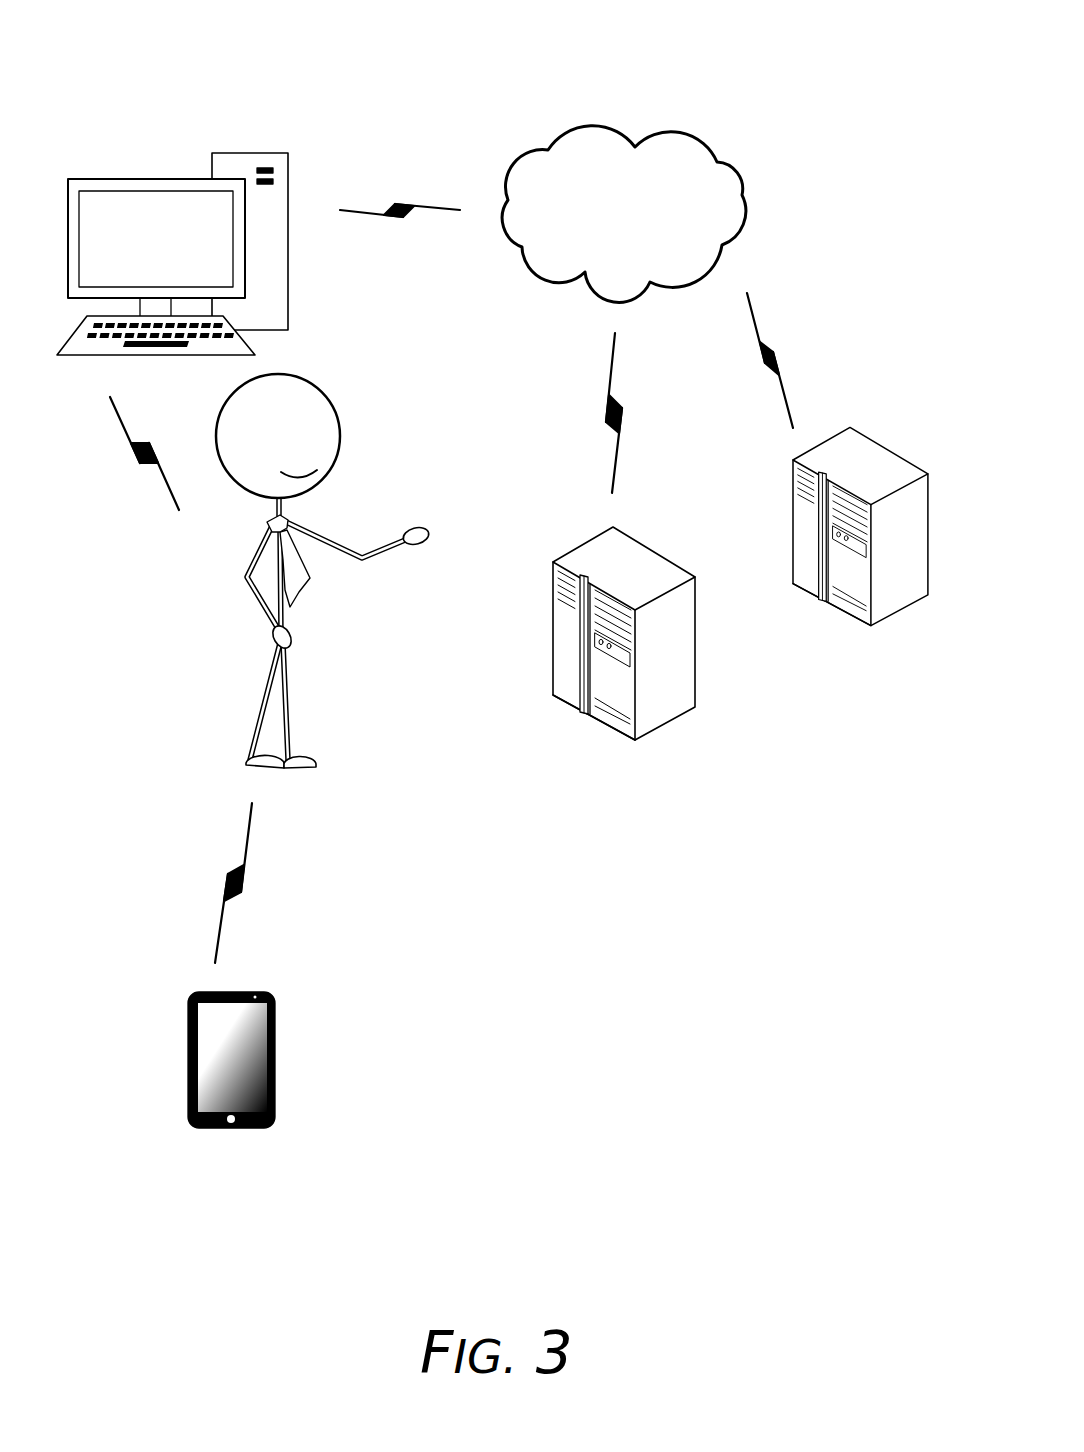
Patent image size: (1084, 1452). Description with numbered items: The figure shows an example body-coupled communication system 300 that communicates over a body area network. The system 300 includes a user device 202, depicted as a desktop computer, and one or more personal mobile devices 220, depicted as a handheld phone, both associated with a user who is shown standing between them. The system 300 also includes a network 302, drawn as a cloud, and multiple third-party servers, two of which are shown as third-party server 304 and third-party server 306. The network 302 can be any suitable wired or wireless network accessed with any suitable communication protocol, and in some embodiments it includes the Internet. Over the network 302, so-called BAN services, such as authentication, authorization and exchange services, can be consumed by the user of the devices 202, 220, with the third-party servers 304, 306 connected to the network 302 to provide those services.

The body-coupled communication system 300 is at (683, 63).
The user device 202 is at (163, 182).
The network 302 is at (550, 146).
The third-party server 304 is at (552, 562).
The third-party server 306 is at (793, 460).
The personal mobile device 220 is at (230, 990).